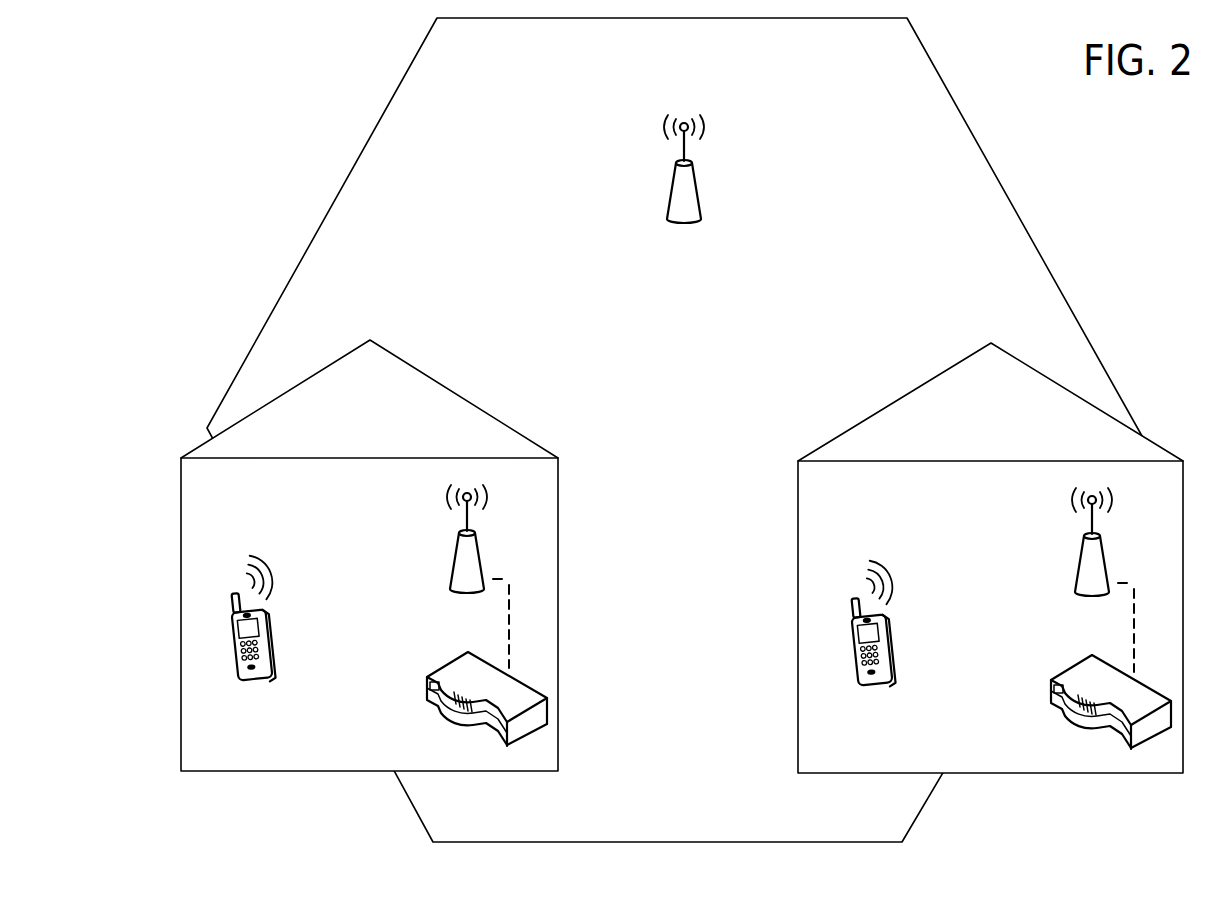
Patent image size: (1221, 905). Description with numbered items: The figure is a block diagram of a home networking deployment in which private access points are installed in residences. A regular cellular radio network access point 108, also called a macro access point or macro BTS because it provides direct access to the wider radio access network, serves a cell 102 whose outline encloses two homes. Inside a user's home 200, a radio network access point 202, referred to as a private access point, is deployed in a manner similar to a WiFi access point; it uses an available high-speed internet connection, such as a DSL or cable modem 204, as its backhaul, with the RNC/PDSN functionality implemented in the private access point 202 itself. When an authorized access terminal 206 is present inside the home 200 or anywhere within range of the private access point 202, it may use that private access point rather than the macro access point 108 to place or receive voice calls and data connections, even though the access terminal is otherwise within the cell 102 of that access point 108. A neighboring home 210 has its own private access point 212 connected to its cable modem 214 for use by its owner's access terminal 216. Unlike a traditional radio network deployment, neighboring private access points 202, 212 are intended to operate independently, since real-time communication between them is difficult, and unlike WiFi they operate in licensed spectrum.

The cell 102 is at (383, 92).
The access point 108 is at (665, 216).
The home 200 is at (307, 772).
The private access point 202 is at (450, 585).
The cable modem 204 is at (483, 705).
The access terminal 206 is at (234, 669).
The neighboring home 210 is at (912, 773).
The private access point 212 is at (1075, 588).
The cable modem 214 is at (1108, 708).
The access terminal 216 is at (855, 672).